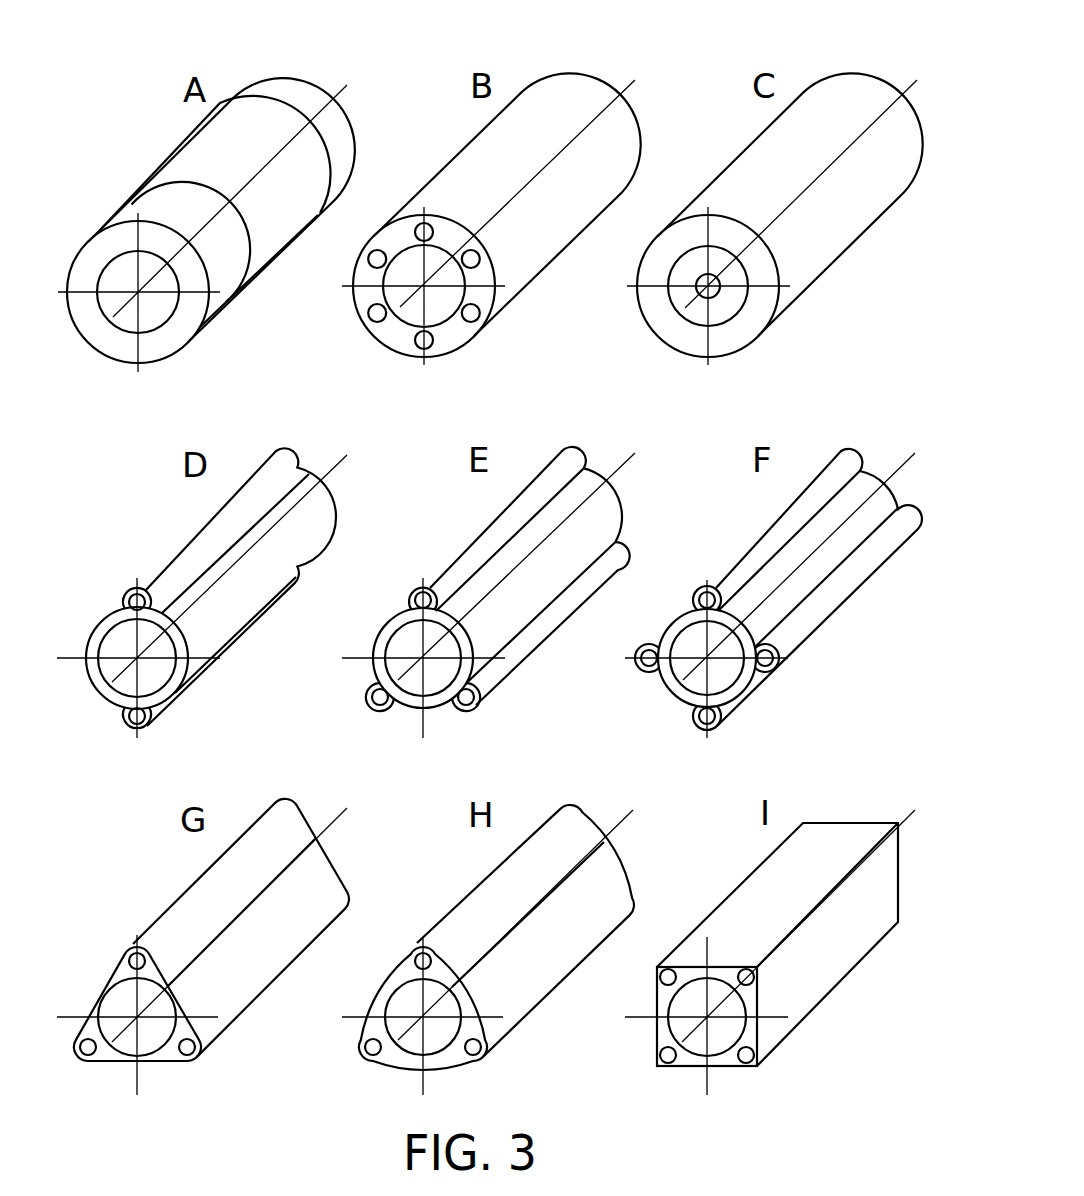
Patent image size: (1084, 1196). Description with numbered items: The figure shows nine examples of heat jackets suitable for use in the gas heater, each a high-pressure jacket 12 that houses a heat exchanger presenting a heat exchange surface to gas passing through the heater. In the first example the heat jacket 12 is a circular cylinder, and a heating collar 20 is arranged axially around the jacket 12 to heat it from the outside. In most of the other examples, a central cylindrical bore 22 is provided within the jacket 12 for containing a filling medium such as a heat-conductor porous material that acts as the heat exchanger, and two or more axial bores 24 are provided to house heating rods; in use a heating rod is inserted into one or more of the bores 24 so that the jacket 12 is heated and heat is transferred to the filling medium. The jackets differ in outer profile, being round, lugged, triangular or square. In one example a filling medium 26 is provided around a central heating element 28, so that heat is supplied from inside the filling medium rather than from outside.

In FIG. 3A, the heat jacket 12 is at (80, 258).
In FIG. 3B, the heat jacket 12 is at (588, 86).
In FIG. 3D, the heat jacket 12 is at (170, 562).
In FIG. 3E, the heat jacket 12 is at (516, 652).
In FIG. 3G, the heat jacket 12 is at (177, 904).
In FIG. 3H, the heat jacket 12 is at (541, 992).
In FIG. 3I, the heat jacket 12 is at (818, 988).
In FIG. 3A, the heating collar 20 is at (160, 167).
In FIG. 3B, the central cylindrical bore 22 is at (402, 317).
In FIG. 3D, the central cylindrical bore 22 is at (166, 679).
In FIG. 3E, the central cylindrical bore 22 is at (438, 690).
In FIG. 3F, the central cylindrical bore 22 is at (733, 684).
In FIG. 3G, the central cylindrical bore 22 is at (154, 1042).
In FIG. 3H, the central cylindrical bore 22 is at (434, 1043).
In FIG. 3I, the central cylindrical bore 22 is at (696, 1047).
In FIG. 3B, the axial bores 24 is at (481, 316).
In FIG. 3F, the axial bores 24 is at (774, 663).
In FIG. 3I, the axial bores 24 is at (747, 1062).
In FIG. 3C, the filling medium 26 is at (734, 312).
In FIG. 3C, the central heating element 28 is at (696, 292).